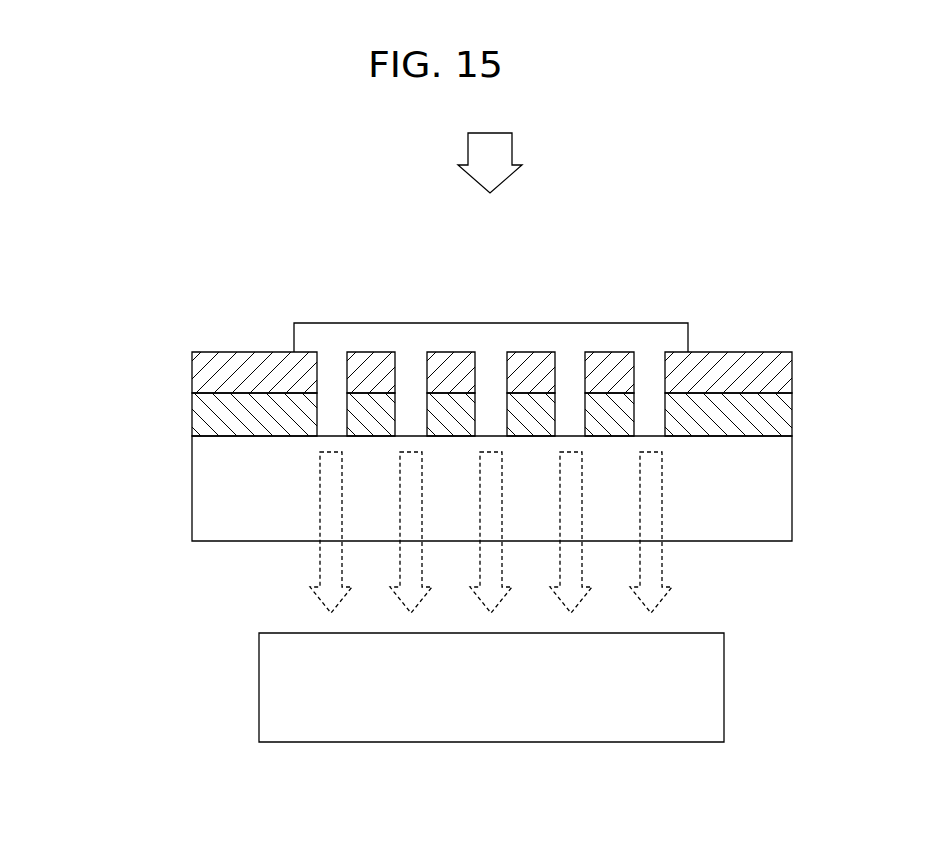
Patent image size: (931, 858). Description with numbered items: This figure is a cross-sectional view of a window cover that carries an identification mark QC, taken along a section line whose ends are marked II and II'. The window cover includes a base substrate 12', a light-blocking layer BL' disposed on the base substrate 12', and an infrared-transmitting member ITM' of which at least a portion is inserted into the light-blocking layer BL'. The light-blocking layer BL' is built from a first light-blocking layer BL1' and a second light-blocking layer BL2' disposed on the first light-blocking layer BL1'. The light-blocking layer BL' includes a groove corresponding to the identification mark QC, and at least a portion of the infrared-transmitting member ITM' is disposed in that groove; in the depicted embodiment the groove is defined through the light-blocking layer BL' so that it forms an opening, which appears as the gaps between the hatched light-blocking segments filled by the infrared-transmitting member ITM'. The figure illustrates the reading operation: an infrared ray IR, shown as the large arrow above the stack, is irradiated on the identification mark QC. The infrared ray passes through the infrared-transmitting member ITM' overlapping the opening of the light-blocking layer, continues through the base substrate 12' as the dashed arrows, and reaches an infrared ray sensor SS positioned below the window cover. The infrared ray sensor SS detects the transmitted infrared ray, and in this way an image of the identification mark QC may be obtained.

The infrared ray IR is at (490, 147).
The identification mark QC is at (667, 245).
The infrared-transmitting member ITM' is at (491, 309).
The light-blocking layer BL' is at (419, 394).
The second light-blocking layer BL2' is at (447, 372).
The first light-blocking layer BL1' is at (447, 414).
The base substrate 12' is at (455, 488).
The section line II-II' end II is at (171, 563).
The section line II-II' end II' is at (797, 561).
The infrared ray sensor SS is at (259, 688).